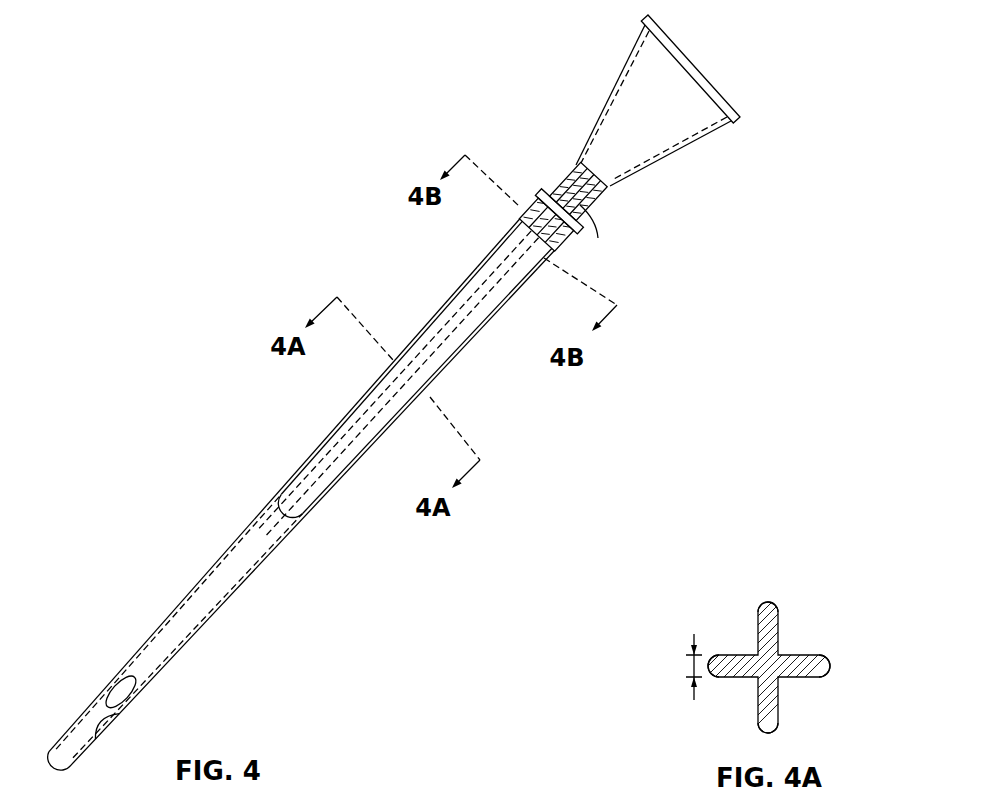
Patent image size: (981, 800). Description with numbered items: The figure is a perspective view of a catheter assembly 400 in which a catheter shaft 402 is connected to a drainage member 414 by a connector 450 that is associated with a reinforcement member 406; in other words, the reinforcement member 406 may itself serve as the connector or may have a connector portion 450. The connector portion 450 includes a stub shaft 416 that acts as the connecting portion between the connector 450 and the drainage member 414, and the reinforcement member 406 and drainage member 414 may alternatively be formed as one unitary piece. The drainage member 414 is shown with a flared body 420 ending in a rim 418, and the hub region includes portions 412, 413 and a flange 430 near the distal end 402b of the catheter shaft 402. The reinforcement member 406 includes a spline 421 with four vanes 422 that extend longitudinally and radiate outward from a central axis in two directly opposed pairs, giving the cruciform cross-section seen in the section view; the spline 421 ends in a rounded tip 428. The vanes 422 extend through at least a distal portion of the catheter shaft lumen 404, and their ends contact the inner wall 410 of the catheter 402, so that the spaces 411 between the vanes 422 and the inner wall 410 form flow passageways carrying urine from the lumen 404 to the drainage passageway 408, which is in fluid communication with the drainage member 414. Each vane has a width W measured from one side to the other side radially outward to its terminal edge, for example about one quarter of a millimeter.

In FIG. 4, the catheter assembly 400 is at (243, 432).
In FIG. 4, the catheter shaft 402 is at (152, 610).
In FIG. 4, the distal end of the catheter shaft 402b is at (536, 198).
In FIG. 4, the catheter shaft lumen 404 is at (137, 667).
In FIG. 4, the reinforcement member 406 is at (450, 300).
In FIG. 4A, the reinforcement member 406 is at (800, 632).
In FIG. 4, the drainage passageway 408 is at (598, 174).
In FIG. 4, the inner wall of catheter 410 is at (170, 664).
In FIG. 4, the spaces between the vanes and inner wall 411 is at (488, 310).
In FIG. 4, the distal hub portion 412 is at (552, 252).
In FIG. 4, the channel 413 is at (590, 200).
In FIG. 4, the drainage member 414 is at (700, 138).
In FIG. 4, the stub shaft 416 is at (575, 171).
In FIG. 4, the funnel rim 418 is at (722, 75).
In FIG. 4, the funnel wall 420 is at (596, 125).
In FIG. 4, the spline 421 is at (327, 483).
In FIG. 4, the vanes 422 is at (446, 352).
In FIG. 4A, the vanes 422 is at (771, 603).
In FIG. 4, the rounded tip 428 is at (274, 518).
In FIG. 4, the flange 430 is at (538, 192).
In FIG. 4, the connector portion 450 is at (494, 249).
In FIG. 4A, the vane width W is at (690, 663).